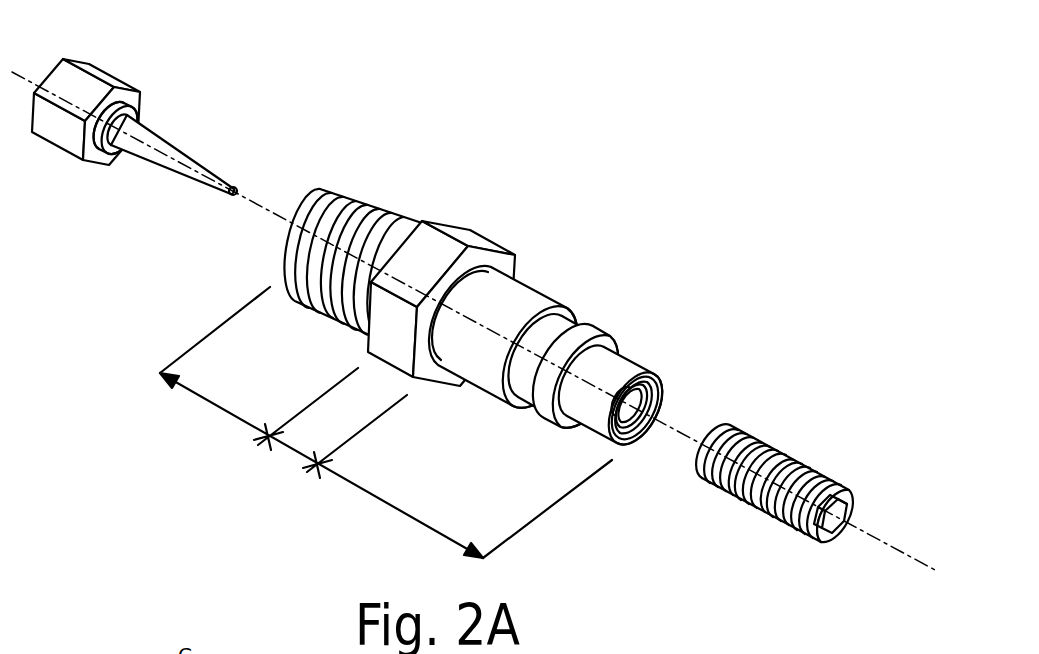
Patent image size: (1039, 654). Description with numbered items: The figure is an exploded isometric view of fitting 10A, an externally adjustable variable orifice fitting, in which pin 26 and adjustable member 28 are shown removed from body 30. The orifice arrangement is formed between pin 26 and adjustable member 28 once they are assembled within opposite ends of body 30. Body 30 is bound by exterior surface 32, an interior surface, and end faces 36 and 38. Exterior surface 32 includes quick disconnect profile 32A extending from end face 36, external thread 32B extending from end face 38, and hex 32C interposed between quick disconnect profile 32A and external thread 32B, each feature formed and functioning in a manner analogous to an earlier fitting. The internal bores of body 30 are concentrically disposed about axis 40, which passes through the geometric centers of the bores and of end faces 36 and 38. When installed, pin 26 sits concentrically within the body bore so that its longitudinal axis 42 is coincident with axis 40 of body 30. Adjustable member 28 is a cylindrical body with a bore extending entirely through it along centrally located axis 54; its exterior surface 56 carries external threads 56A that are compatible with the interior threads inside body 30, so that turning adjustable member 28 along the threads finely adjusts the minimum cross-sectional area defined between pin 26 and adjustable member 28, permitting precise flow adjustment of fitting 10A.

The fitting 10A is at (473, 312).
The pin 26 is at (178, 133).
The adjustable member 28 is at (814, 462).
The body 30 is at (474, 311).
The exterior surface 32 is at (551, 376).
The quick disconnect profile 32A is at (479, 509).
The external thread 32B is at (316, 422).
The hex 32C is at (323, 443).
The end face 36 is at (628, 443).
The end face 38 is at (318, 192).
The axis 40 is at (398, 280).
The longitudinal axis 42 is at (14, 68).
The axis 54 is at (882, 542).
The exterior surface 56 is at (772, 521).
The external threads 56A is at (770, 518).